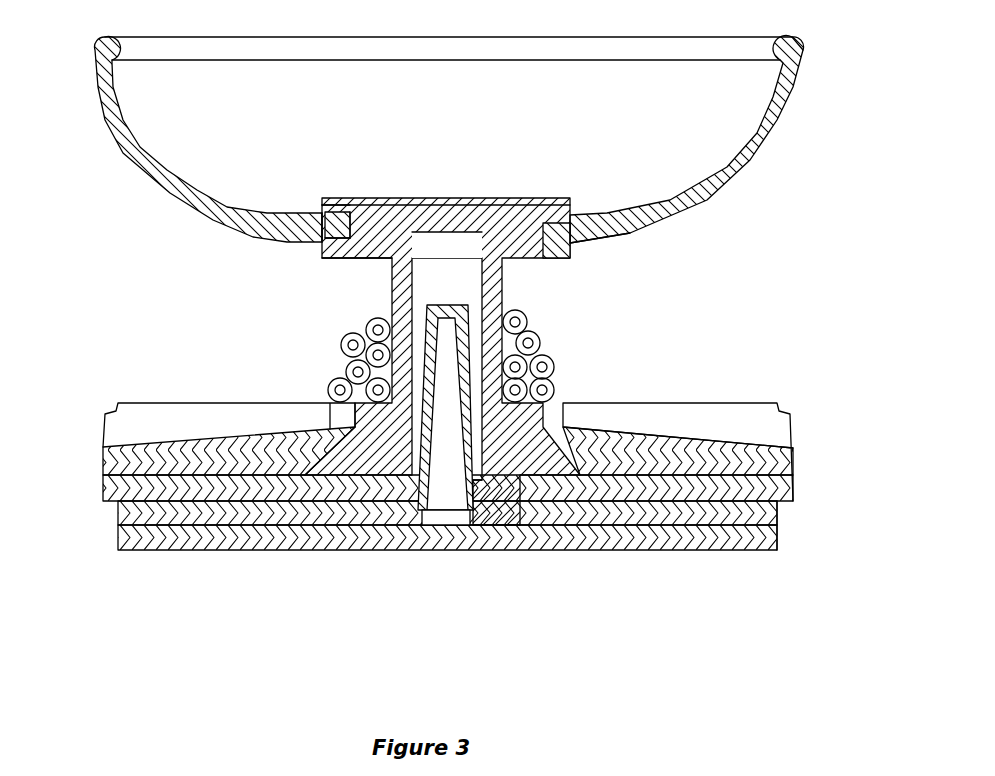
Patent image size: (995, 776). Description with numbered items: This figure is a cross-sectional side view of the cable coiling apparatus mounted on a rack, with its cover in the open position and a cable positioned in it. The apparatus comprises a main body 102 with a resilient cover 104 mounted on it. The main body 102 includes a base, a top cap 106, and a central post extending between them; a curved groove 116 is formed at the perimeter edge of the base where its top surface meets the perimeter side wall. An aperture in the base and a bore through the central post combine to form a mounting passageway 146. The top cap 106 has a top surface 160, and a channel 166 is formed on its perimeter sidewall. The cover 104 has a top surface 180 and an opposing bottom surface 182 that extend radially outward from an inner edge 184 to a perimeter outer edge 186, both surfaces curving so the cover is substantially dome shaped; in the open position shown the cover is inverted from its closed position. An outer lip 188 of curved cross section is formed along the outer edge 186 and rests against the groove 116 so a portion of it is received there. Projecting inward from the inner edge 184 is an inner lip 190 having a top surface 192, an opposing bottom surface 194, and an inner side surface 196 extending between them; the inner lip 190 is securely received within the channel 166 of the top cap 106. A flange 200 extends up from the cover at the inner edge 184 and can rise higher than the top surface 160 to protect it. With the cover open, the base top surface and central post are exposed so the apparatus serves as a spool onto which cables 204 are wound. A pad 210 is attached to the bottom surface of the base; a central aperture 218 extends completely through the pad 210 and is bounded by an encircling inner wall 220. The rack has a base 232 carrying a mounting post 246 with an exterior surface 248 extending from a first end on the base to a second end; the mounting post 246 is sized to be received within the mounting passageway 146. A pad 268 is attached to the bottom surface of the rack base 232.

The main body 102 is at (173, 403).
The cover 104 is at (783, 92).
The top cap 106 is at (382, 250).
The groove 116 is at (781, 411).
The mounting passageway 146 is at (443, 252).
The top surface 160 is at (481, 205).
The channel 166 is at (563, 230).
The top surface 180 is at (740, 160).
The bottom surface 182 is at (760, 155).
The inner edge 184 is at (617, 263).
The outer edge 186 is at (830, 66).
The outer lip 188 is at (243, 47).
The inner lip 190 is at (333, 237).
The top surface 192 is at (345, 210).
The bottom surface 194 is at (332, 246).
The inner side surface 196 is at (360, 230).
The flange 200 is at (320, 202).
The cables 204 is at (338, 383).
The pad 210 is at (791, 488).
The aperture 218 is at (435, 490).
The inner wall 220 is at (483, 487).
The base 232 is at (118, 513).
The mounting post 246 is at (455, 337).
The exterior surface 248 is at (468, 352).
The pad 268 is at (118, 550).